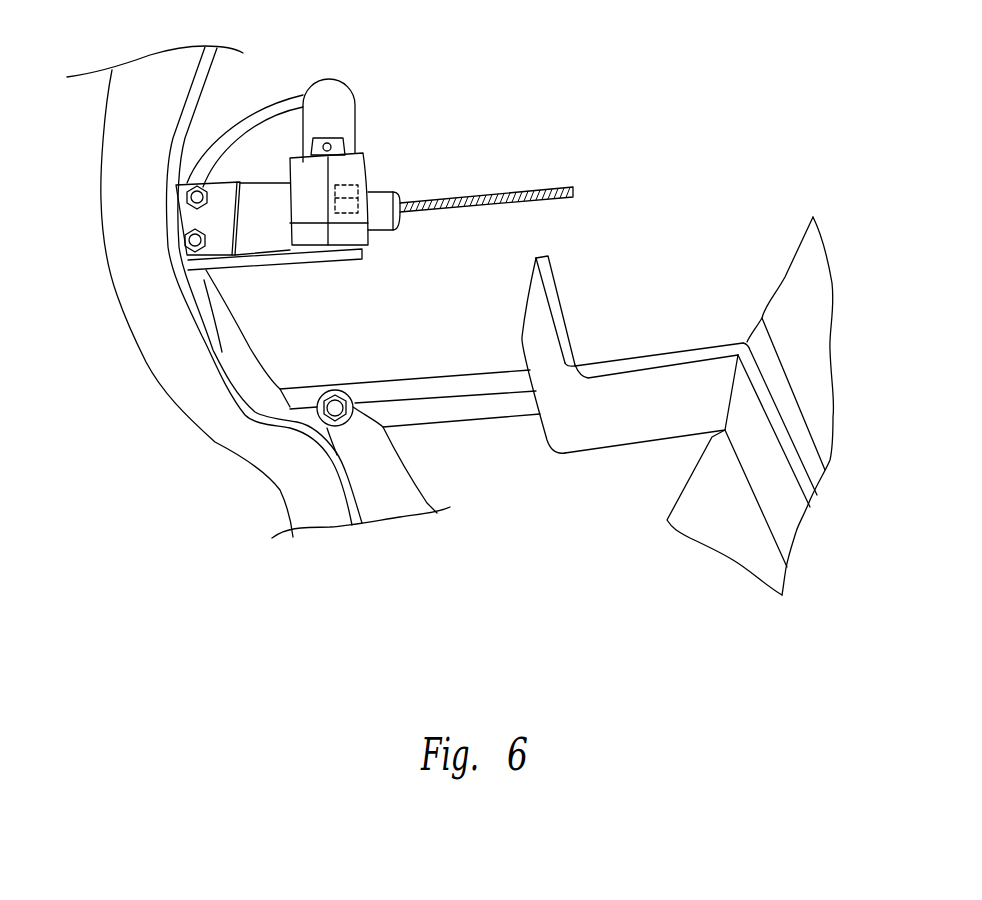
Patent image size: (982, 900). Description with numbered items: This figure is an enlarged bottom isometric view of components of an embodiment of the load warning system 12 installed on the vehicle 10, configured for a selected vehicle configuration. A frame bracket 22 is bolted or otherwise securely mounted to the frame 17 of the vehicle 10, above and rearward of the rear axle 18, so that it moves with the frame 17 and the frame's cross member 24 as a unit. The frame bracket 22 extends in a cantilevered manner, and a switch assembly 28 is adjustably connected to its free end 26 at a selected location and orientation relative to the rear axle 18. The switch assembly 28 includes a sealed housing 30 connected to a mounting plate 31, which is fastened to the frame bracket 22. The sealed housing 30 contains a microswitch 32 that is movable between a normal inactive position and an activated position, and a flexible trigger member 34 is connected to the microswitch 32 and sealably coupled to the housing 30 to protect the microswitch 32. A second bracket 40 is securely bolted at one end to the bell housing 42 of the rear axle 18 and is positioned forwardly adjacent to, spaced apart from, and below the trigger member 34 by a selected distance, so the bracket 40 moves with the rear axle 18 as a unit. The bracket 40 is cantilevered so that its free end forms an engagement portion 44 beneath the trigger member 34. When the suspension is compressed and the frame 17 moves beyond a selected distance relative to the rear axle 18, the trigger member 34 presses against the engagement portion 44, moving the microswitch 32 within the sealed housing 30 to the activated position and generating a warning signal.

The vehicle 10 is at (177, 462).
The load warning system 12 is at (676, 92).
The frame 17 is at (199, 103).
The rear axle 18 is at (777, 275).
The frame bracket 22 is at (218, 188).
The cross member 24 is at (133, 183).
The free end 26 is at (224, 240).
The switch assembly 28 is at (368, 137).
The sealed housing 30 is at (358, 172).
The mounting plate 31 is at (268, 207).
The microswitch 32 is at (358, 185).
The flexible trigger member 34 is at (503, 197).
The second bracket 40 is at (657, 354).
The bell housing 42 is at (783, 398).
The engagement portion 44 is at (527, 285).